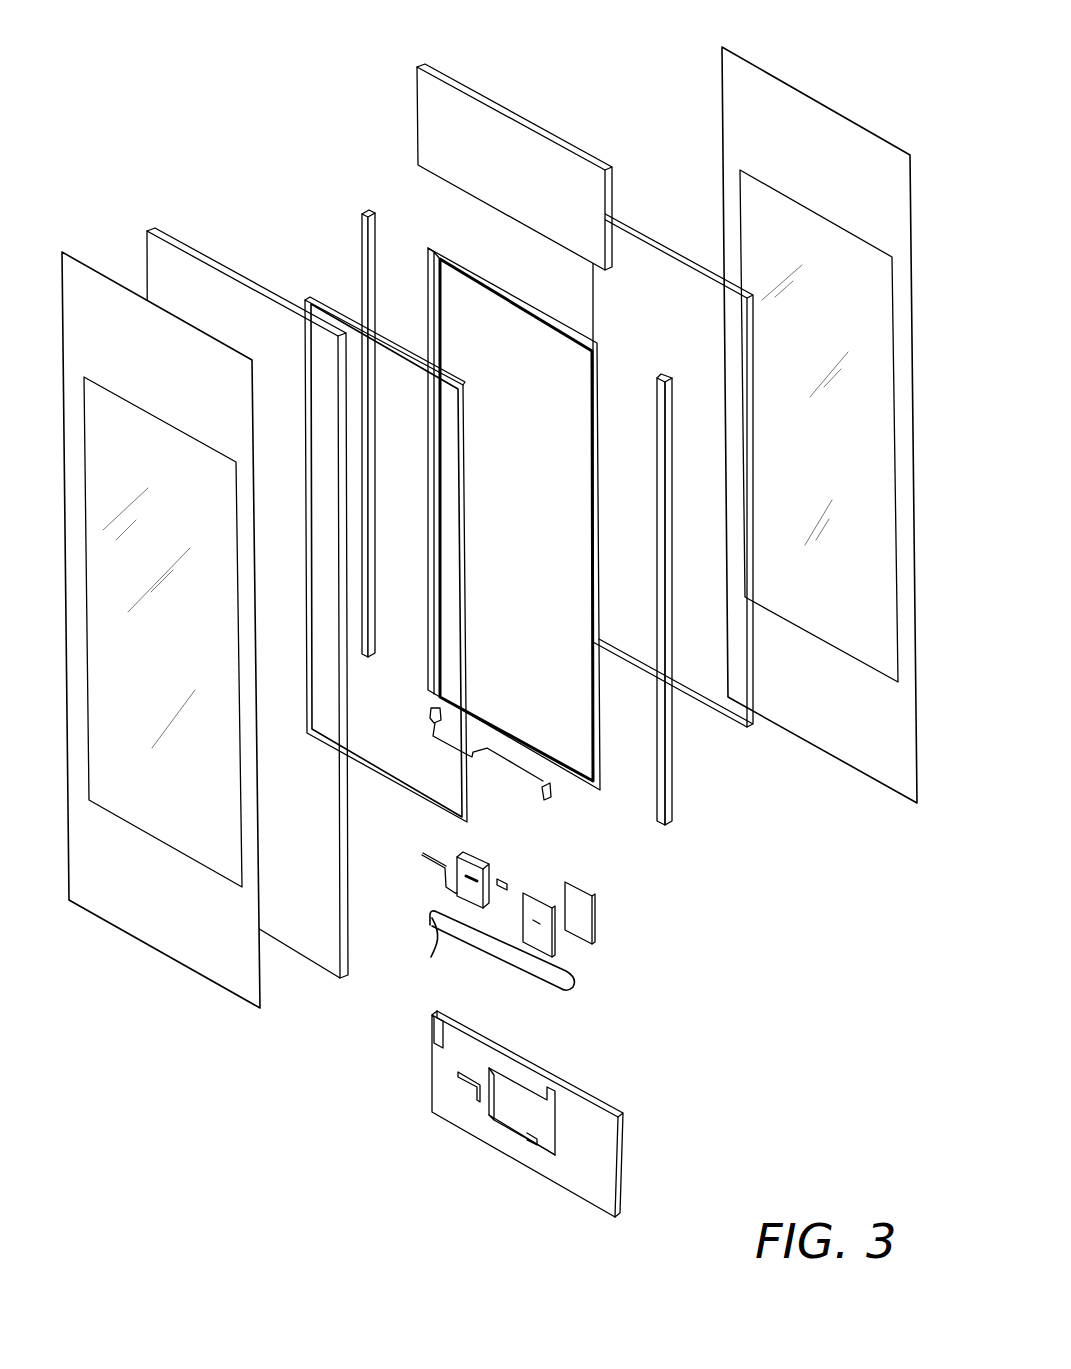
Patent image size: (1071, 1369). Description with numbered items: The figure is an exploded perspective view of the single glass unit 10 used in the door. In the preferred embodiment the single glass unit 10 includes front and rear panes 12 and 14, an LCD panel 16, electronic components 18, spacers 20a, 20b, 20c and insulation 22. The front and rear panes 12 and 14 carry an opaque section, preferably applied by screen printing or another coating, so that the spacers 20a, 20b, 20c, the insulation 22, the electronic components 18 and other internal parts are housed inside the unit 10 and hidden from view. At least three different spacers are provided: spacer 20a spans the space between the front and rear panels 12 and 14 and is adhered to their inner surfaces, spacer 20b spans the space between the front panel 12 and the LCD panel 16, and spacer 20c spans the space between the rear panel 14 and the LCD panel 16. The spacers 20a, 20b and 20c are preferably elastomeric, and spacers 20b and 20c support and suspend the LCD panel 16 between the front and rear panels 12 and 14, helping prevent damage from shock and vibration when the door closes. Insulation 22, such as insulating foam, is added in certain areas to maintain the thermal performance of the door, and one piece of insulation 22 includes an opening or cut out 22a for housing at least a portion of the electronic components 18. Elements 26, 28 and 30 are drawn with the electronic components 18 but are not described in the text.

The single glass unit 10 is at (136, 101).
The front pane 12 is at (819, 443).
The rear pane 14 is at (161, 599).
The LCD panel 16 is at (432, 250).
The electronic components 18 is at (571, 920).
The spacer 20a is at (168, 240).
The spacer 20b is at (752, 731).
The spacer 20c is at (417, 796).
The insulation 22 is at (519, 640).
The cut out 22a is at (514, 1115).
The circuit board 26 is at (543, 948).
The cable 28 is at (527, 776).
The control module 30 is at (490, 867).